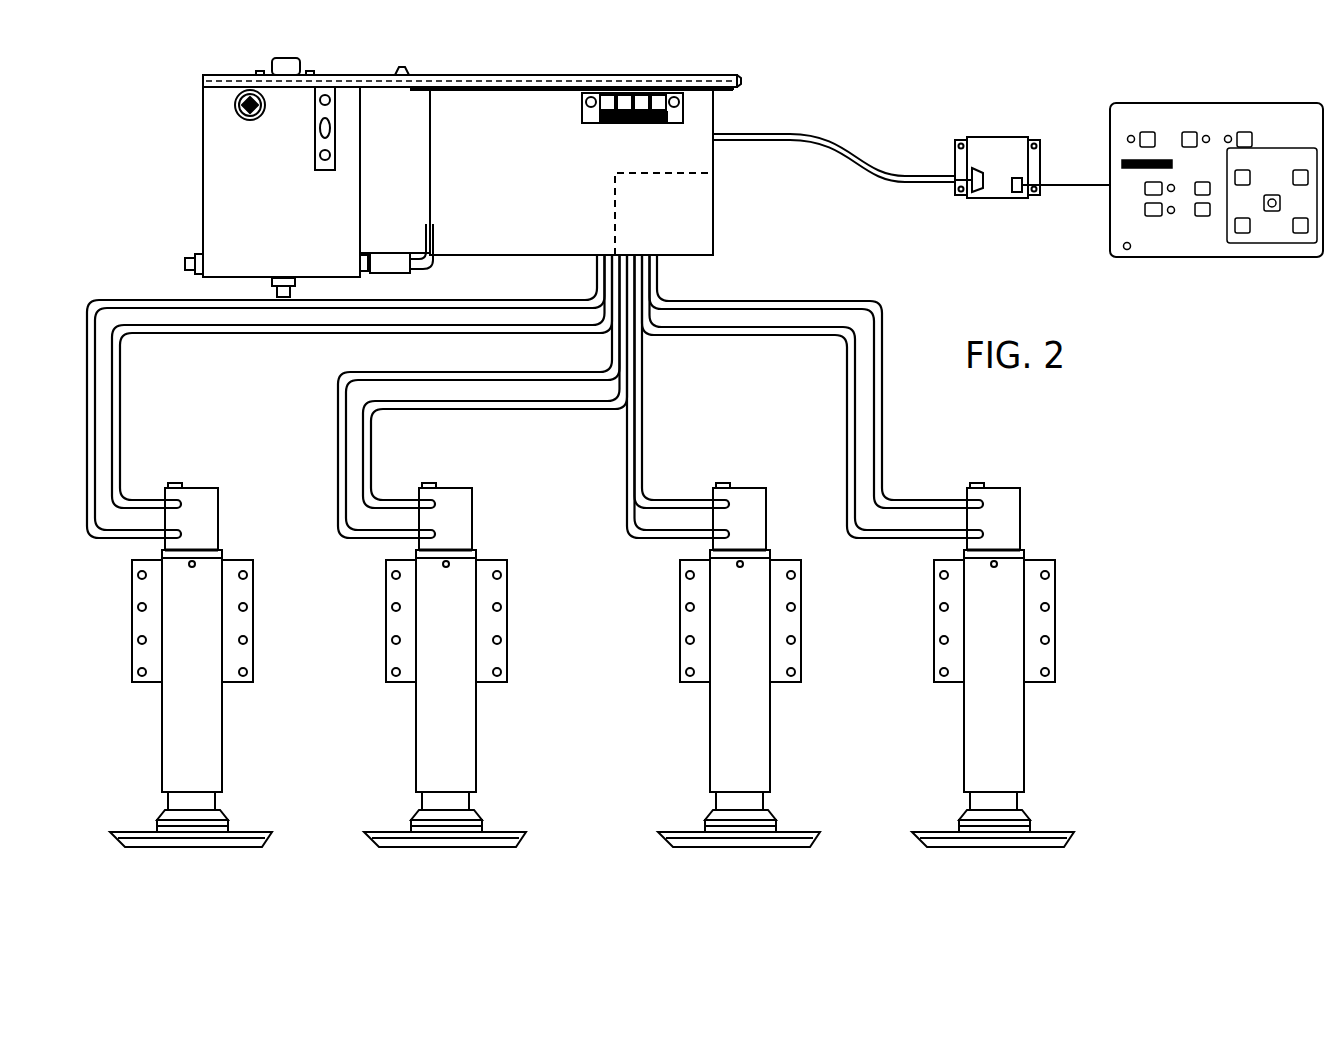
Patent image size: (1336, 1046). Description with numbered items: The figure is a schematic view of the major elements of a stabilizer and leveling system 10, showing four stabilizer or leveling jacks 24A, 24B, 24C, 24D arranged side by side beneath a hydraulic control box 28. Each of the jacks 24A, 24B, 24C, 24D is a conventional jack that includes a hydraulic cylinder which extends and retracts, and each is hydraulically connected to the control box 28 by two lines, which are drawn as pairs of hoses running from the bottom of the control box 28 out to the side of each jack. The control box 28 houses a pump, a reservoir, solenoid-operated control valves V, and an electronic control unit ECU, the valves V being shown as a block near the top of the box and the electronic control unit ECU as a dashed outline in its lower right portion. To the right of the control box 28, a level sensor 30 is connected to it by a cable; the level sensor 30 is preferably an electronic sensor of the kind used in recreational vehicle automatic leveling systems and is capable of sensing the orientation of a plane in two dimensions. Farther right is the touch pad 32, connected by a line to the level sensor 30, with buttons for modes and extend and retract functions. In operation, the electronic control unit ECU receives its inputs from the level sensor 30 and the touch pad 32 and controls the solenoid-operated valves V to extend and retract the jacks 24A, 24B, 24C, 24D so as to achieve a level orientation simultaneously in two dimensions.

The system 10 is at (1331, 92).
The hydraulic control box 28 is at (574, 77).
The level sensor 30 is at (998, 137).
The touch pad 32 is at (1219, 103).
The solenoid-operated valves V is at (678, 121).
The electronic control unit ECU is at (613, 216).
The stabilizer jack 24A is at (223, 700).
The stabilizer jack 24B is at (477, 700).
The stabilizer jack 24C is at (771, 700).
The stabilizer jack 24D is at (1025, 700).